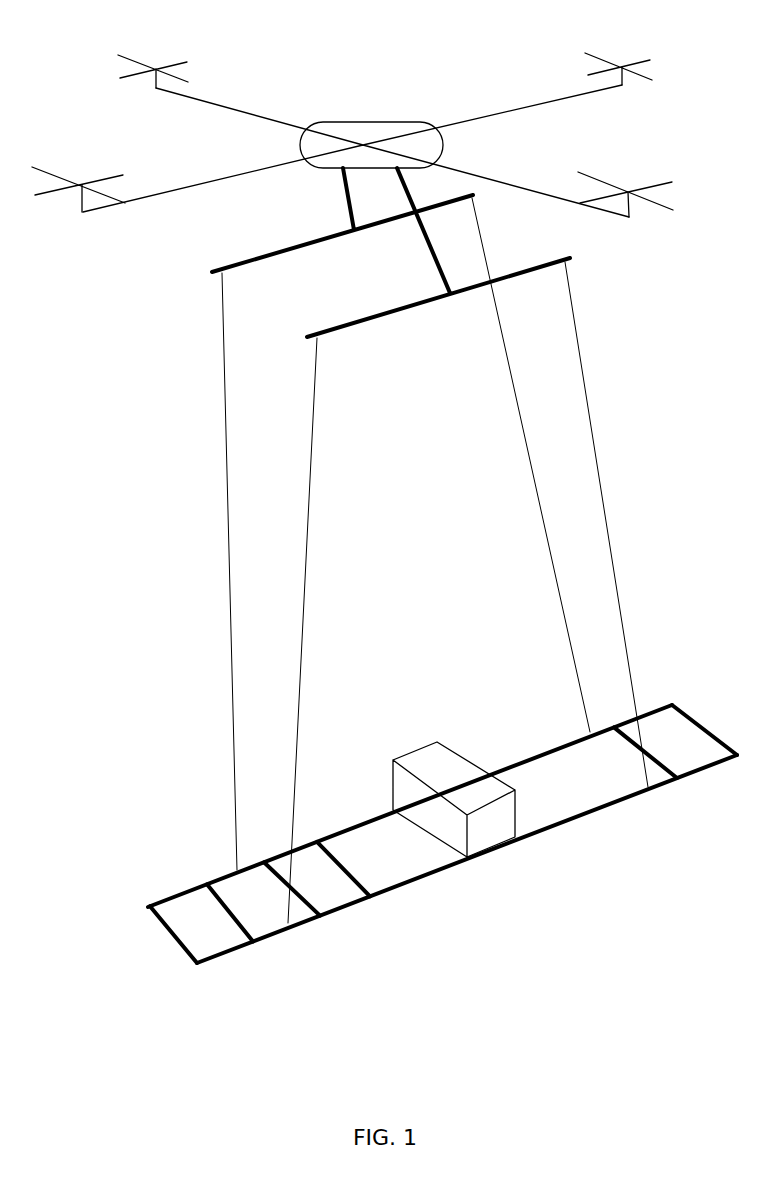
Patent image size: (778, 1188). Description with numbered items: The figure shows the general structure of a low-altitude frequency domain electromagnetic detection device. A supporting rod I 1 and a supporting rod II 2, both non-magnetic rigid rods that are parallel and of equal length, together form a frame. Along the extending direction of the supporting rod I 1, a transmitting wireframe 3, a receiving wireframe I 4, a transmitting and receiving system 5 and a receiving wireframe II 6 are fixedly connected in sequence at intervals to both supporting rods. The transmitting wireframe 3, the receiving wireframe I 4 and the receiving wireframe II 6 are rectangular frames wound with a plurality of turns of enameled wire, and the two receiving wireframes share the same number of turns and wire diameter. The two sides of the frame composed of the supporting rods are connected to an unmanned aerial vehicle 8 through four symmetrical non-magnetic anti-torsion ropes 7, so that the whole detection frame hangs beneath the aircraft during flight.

The supporting rod I 1 is at (222, 877).
The supporting rod II 2 is at (602, 807).
The transmitting wireframe 3 is at (220, 907).
The receiving wireframe I 4 is at (338, 876).
The transmitting and receiving system 5 is at (497, 825).
The receiving wireframe II 6 is at (690, 728).
The anti-torsion rope 7 is at (312, 467).
The unmanned aerial vehicle 8 is at (363, 145).